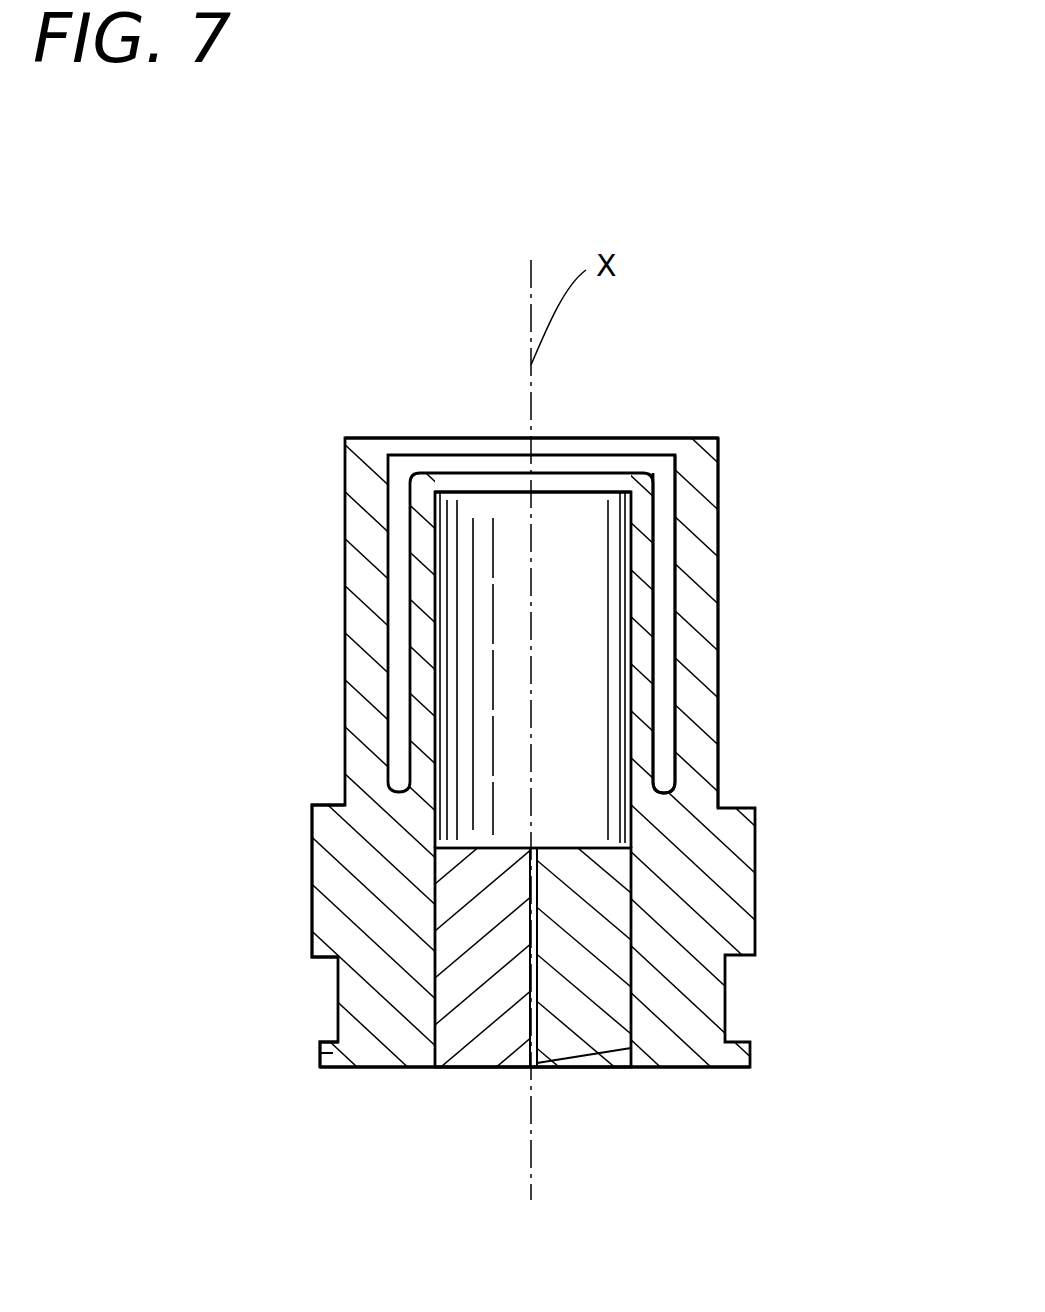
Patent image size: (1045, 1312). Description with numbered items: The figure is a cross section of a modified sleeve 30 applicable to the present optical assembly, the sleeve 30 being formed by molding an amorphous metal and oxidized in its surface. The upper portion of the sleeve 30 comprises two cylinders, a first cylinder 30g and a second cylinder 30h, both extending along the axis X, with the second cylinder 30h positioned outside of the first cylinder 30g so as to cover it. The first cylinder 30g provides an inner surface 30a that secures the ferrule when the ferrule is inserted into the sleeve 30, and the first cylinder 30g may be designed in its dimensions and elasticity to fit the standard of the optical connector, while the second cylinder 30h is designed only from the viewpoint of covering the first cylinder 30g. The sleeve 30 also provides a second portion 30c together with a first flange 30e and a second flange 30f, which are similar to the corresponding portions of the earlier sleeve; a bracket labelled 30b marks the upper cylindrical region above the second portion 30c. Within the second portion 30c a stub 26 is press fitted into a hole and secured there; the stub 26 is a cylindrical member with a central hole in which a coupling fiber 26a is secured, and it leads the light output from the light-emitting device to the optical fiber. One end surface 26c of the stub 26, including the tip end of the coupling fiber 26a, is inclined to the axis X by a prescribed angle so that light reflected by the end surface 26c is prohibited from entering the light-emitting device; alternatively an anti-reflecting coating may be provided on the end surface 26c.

The sleeve 30 is at (813, 330).
The inner surface 30a is at (614, 492).
The upper cylindrical portion 30b is at (828, 440).
The second portion 30c is at (828, 813).
The first flange 30e is at (318, 1053).
The second flange 30f is at (347, 902).
The first cylinder 30g is at (640, 690).
The second cylinder 30h is at (698, 577).
The stub 26 is at (627, 1010).
The coupling fiber 26a is at (538, 1042).
The end surface 26c is at (612, 1068).